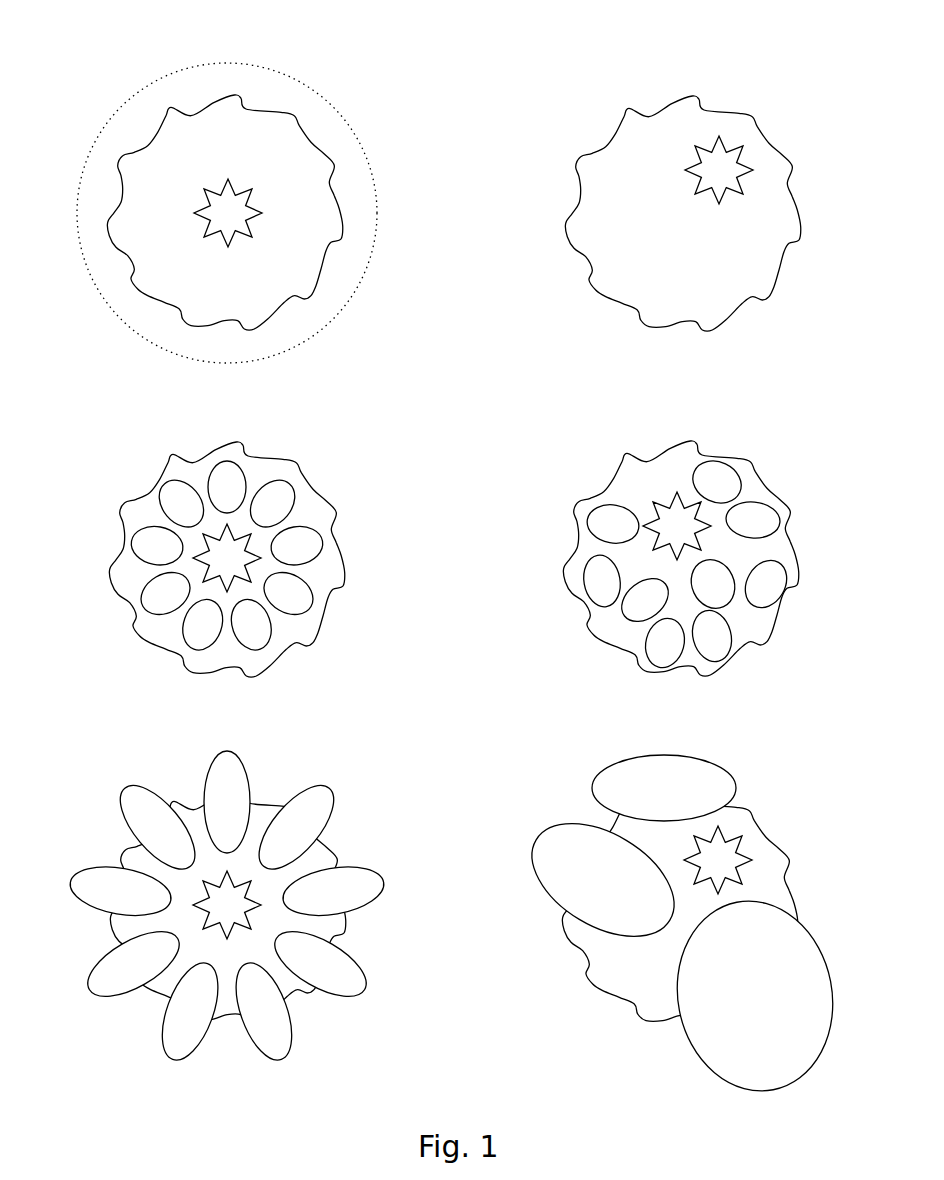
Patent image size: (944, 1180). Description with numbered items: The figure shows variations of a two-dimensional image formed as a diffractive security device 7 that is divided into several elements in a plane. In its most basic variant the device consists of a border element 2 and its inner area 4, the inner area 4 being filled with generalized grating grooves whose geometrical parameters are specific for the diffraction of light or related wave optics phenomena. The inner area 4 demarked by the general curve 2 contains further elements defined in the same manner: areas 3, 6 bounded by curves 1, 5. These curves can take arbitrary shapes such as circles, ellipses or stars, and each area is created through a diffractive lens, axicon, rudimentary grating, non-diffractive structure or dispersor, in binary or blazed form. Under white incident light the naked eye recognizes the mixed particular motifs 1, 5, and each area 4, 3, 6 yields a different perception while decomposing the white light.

The curve 1 is at (458, 555).
The border element 2 is at (327, 157).
The area 3 is at (473, 537).
The inner area 4 is at (479, 560).
The curve 5 is at (466, 778).
The area 6 is at (763, 587).
The diffractive security device 7 is at (127, 106).